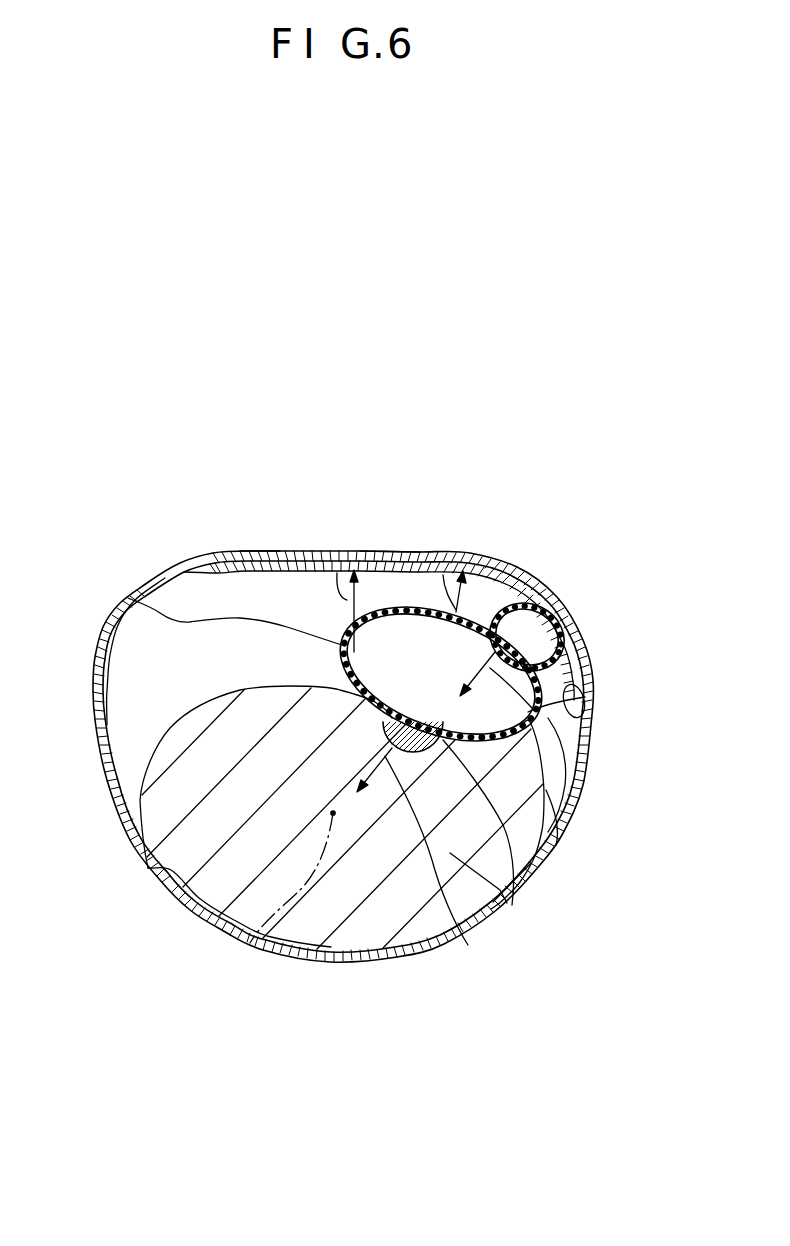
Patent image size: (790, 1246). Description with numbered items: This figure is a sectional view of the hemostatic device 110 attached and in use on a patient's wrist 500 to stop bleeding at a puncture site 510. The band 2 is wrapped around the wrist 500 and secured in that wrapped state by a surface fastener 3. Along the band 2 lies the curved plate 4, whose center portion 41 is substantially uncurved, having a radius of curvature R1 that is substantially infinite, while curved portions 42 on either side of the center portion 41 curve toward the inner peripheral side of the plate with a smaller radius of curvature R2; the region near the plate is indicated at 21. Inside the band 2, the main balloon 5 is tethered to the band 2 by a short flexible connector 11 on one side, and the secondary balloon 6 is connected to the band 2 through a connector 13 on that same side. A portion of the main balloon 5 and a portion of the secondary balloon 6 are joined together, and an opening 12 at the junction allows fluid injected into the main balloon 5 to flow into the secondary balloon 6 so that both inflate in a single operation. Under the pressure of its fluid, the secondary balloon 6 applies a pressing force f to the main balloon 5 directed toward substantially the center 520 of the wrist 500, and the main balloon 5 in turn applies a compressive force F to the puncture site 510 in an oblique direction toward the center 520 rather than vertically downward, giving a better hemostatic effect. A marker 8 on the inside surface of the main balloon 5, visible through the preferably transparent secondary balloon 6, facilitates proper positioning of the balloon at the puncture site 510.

The hemostatic device 110 is at (493, 470).
The band 2 is at (104, 786).
The surface fastener 3 is at (370, 955).
The curved plate 4 is at (288, 560).
The curved portions 42 is at (197, 560).
The top portion 21 is at (257, 556).
The center portion 41 is at (385, 558).
The radius of curvature of the center portion R1 is at (346, 550).
The radius of curvature of the curved portions R2 is at (450, 552).
The main balloon 5 is at (137, 597).
The secondary balloon 6 is at (487, 572).
The opening 12 is at (515, 638).
The marker 8 is at (417, 718).
The connector 13 is at (592, 722).
The connector 11 is at (575, 772).
The pressing force f is at (566, 797).
The puncture site 510 is at (548, 855).
The wrist 500 is at (510, 917).
The compressive force F is at (468, 945).
The center of the wrist 520 is at (250, 943).